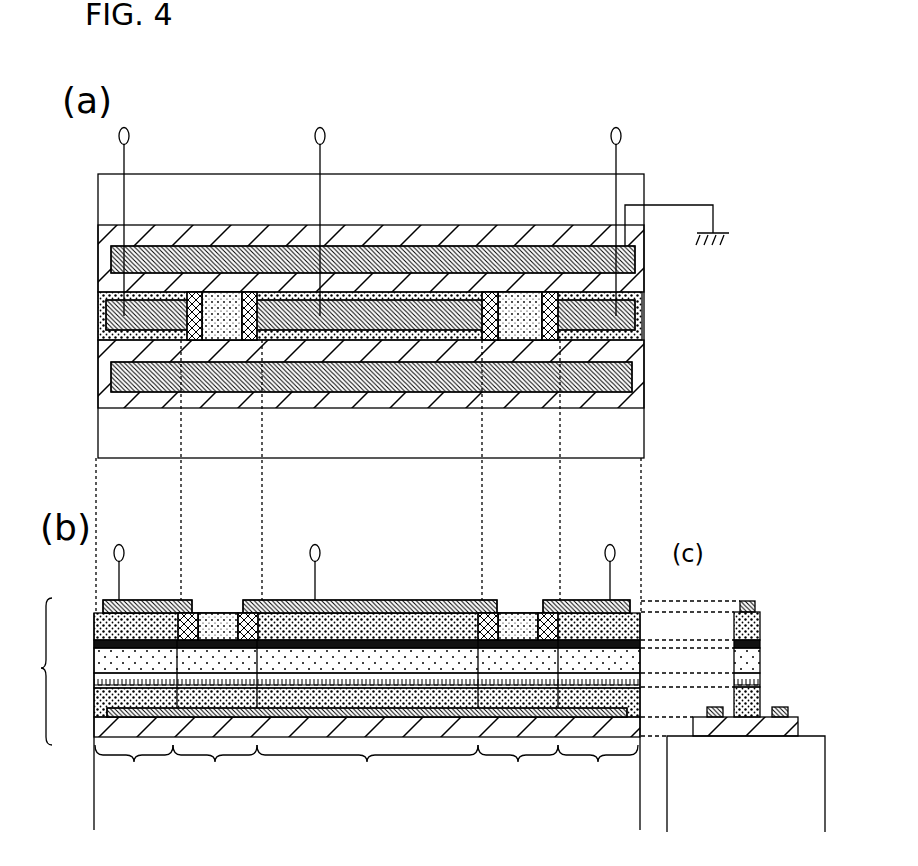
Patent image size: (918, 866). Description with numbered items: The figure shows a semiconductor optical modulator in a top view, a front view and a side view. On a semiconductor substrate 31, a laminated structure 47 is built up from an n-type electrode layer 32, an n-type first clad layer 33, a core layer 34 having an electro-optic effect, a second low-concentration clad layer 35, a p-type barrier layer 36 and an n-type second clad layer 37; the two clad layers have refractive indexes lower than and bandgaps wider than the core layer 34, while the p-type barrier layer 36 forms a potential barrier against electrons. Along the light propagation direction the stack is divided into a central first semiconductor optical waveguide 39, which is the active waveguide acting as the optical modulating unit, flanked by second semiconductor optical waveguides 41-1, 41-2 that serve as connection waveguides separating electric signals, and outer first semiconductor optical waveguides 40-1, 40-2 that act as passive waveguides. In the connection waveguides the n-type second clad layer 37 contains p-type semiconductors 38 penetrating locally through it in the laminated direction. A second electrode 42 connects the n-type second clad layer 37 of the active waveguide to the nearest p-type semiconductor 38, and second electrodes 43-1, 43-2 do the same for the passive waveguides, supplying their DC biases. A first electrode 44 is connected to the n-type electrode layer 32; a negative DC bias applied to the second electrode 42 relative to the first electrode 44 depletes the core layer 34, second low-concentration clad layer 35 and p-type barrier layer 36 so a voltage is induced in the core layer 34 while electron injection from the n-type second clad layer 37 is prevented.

The semiconductor substrate 31 is at (99, 426).
The n-type electrode layer 32 is at (99, 369).
The n-type first clad layer 33 is at (94, 702).
The core layer 34 is at (94, 680).
The second low-concentration clad layer 35 is at (94, 662).
The p-type barrier layer 36 is at (94, 645).
The n-type second clad layer 37 is at (94, 617).
The p-type semiconductor 38 is at (248, 293).
The first semiconductor optical waveguide 39 is at (367, 766).
The first semiconductor optical waveguide 40-1 is at (134, 766).
The first semiconductor optical waveguide 40-2 is at (598, 766).
The second semiconductor optical waveguide 41-1 is at (215, 766).
The second semiconductor optical waveguide 41-2 is at (518, 766).
The second electrode 42 is at (371, 300).
The second electrode 43-1 is at (100, 320).
The second electrode 43-2 is at (642, 318).
The first electrode 44 is at (636, 259).
The laminated structure 47 is at (99, 297).